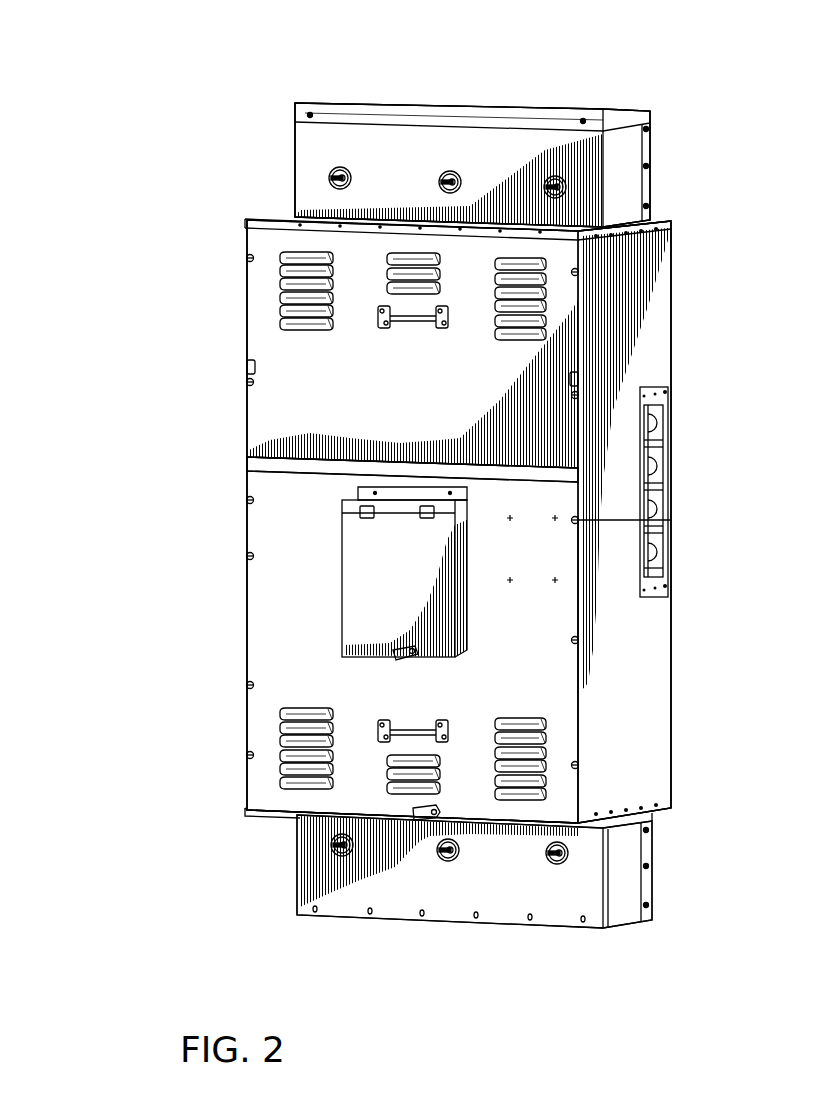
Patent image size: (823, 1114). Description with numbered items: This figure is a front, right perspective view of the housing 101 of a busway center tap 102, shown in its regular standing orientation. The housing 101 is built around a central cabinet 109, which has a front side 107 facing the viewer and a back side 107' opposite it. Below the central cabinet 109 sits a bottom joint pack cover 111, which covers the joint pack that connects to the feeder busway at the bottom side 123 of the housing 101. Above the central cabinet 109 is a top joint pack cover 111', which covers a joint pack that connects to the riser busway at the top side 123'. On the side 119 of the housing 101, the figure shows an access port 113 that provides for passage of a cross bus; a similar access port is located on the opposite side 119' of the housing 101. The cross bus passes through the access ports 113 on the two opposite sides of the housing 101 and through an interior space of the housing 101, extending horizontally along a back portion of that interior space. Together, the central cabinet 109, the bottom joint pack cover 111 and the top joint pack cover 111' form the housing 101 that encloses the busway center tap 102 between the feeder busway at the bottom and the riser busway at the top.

The housing 101 is at (118, 116).
The busway center tap 102 is at (631, 88).
The front side 107 is at (382, 394).
The back side 107' is at (675, 370).
The central cabinet 109 is at (185, 218).
The bottom joint pack cover 111 is at (474, 900).
The top joint pack cover 111' is at (425, 165).
The access port 113 is at (676, 492).
The side 119 is at (659, 671).
The opposite side 119' is at (379, 647).
The bottom side 123 is at (385, 834).
The top side 123' is at (435, 203).